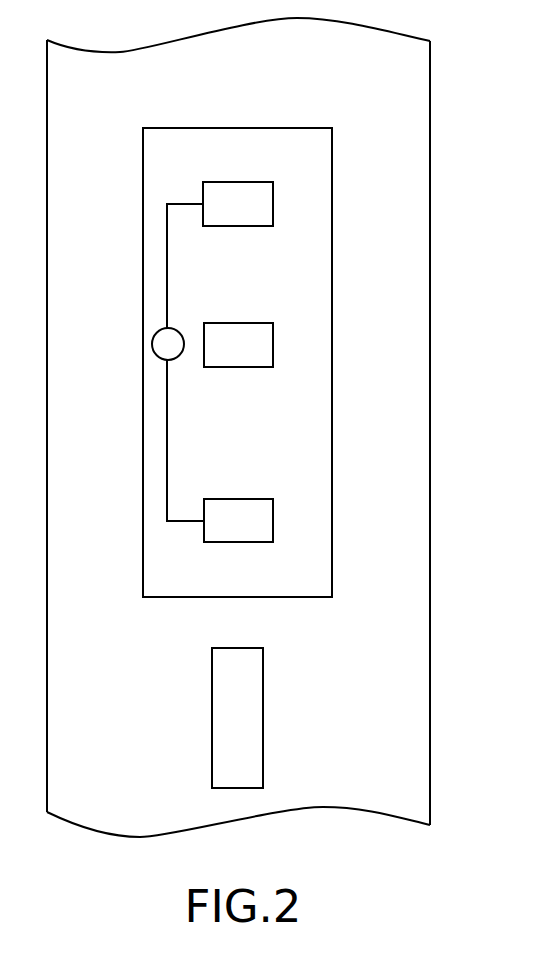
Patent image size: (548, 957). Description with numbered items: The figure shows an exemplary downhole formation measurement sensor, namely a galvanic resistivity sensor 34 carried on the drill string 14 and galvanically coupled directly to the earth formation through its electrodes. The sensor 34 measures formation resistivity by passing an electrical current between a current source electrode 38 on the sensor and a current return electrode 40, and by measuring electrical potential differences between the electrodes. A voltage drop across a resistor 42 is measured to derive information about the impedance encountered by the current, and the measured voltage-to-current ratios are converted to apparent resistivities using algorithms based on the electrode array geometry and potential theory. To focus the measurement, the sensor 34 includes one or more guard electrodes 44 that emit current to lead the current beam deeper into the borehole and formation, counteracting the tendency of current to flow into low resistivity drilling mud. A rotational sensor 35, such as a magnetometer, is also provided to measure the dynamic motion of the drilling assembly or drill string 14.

The drill string 14 is at (408, 62).
The resistivity sensor 34 is at (212, 145).
The rotational sensor 35 is at (263, 718).
The current source electrode 38 is at (273, 204).
The current return electrode 40 is at (273, 521).
The resistor 42 is at (167, 432).
The guard electrodes 44 is at (273, 344).